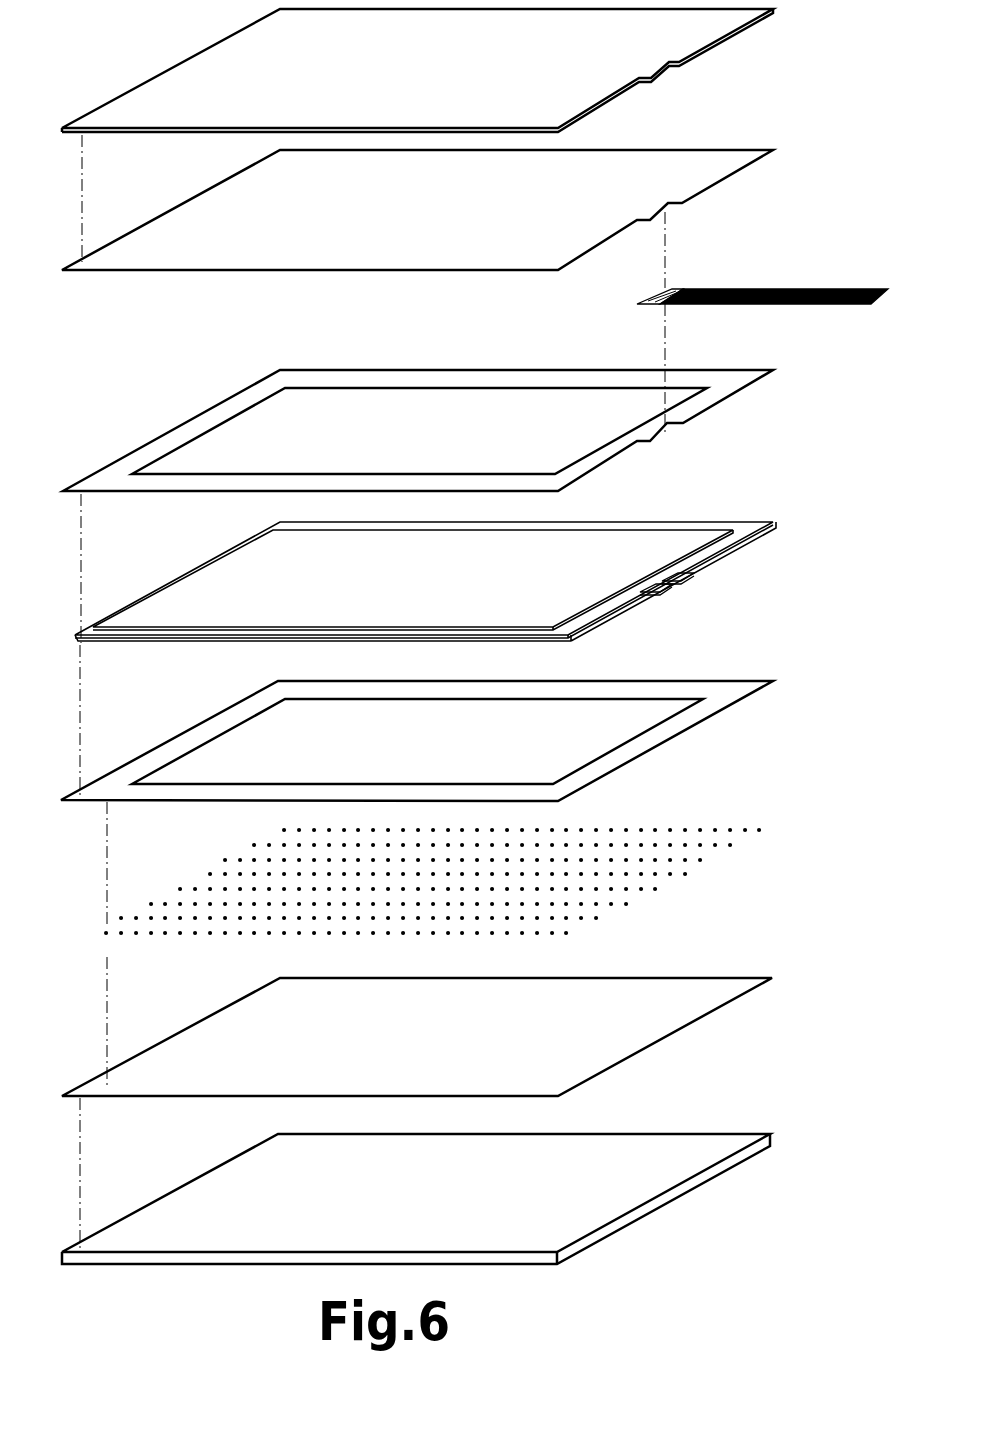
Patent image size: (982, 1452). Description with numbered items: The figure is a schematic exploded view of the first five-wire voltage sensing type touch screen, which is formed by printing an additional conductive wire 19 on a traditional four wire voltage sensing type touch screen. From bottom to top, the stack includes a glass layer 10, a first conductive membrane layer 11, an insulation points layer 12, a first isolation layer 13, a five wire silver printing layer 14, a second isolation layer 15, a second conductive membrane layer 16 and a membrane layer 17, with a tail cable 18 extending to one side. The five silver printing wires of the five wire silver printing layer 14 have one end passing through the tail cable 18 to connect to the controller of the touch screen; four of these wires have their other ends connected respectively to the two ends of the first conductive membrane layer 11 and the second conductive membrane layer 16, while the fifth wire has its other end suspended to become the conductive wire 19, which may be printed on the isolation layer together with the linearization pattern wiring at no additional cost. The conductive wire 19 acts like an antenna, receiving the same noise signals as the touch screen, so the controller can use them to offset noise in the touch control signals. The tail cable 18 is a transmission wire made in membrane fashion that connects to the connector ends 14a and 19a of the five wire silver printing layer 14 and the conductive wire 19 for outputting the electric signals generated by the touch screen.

The glass layer 10 is at (700, 1150).
The first conductive membrane layer 11 is at (697, 998).
The insulation points layer 12 is at (700, 862).
The first isolation layer 13 is at (695, 717).
The five wire silver printing layer 14 is at (650, 522).
The connector end 14a is at (675, 578).
The second isolation layer 15 is at (718, 387).
The second conductive membrane layer 16 is at (720, 157).
The membrane layer 17 is at (728, 24).
The tail cable 18 is at (773, 292).
The conductive wire 19 is at (125, 608).
The connector end 19a is at (657, 590).